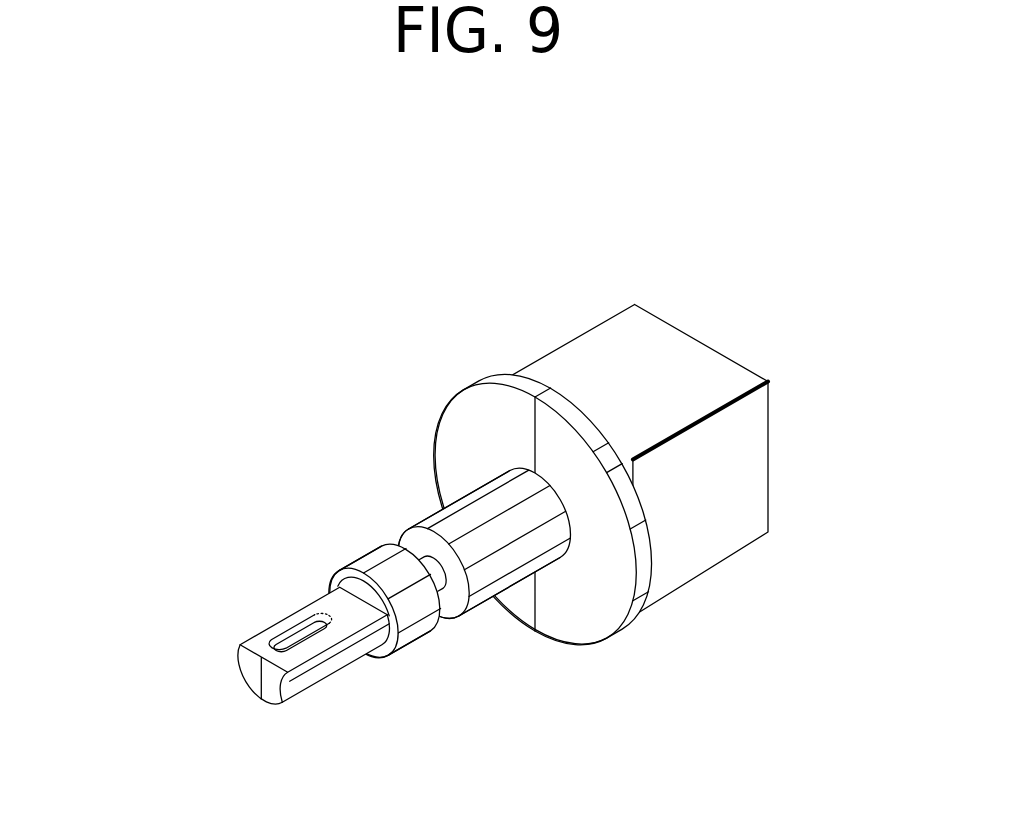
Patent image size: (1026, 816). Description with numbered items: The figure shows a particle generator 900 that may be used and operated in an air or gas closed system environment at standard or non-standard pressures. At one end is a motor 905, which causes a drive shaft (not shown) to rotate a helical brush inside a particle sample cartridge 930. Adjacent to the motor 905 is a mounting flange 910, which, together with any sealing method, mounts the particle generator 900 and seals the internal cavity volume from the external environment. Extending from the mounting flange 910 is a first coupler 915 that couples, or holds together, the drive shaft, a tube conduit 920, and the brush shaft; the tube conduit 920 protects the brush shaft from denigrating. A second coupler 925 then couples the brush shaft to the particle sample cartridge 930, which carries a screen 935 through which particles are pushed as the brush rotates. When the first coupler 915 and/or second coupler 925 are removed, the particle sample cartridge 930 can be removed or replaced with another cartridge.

The particle generator 900 is at (927, 161).
The motor 905 is at (728, 496).
The mounting flange 910 is at (598, 596).
The first coupler 915 is at (491, 600).
The tube conduit 920 is at (438, 589).
The second coupler 925 is at (398, 648).
The particle sample cartridge 930 is at (323, 686).
The screen 935 is at (297, 620).